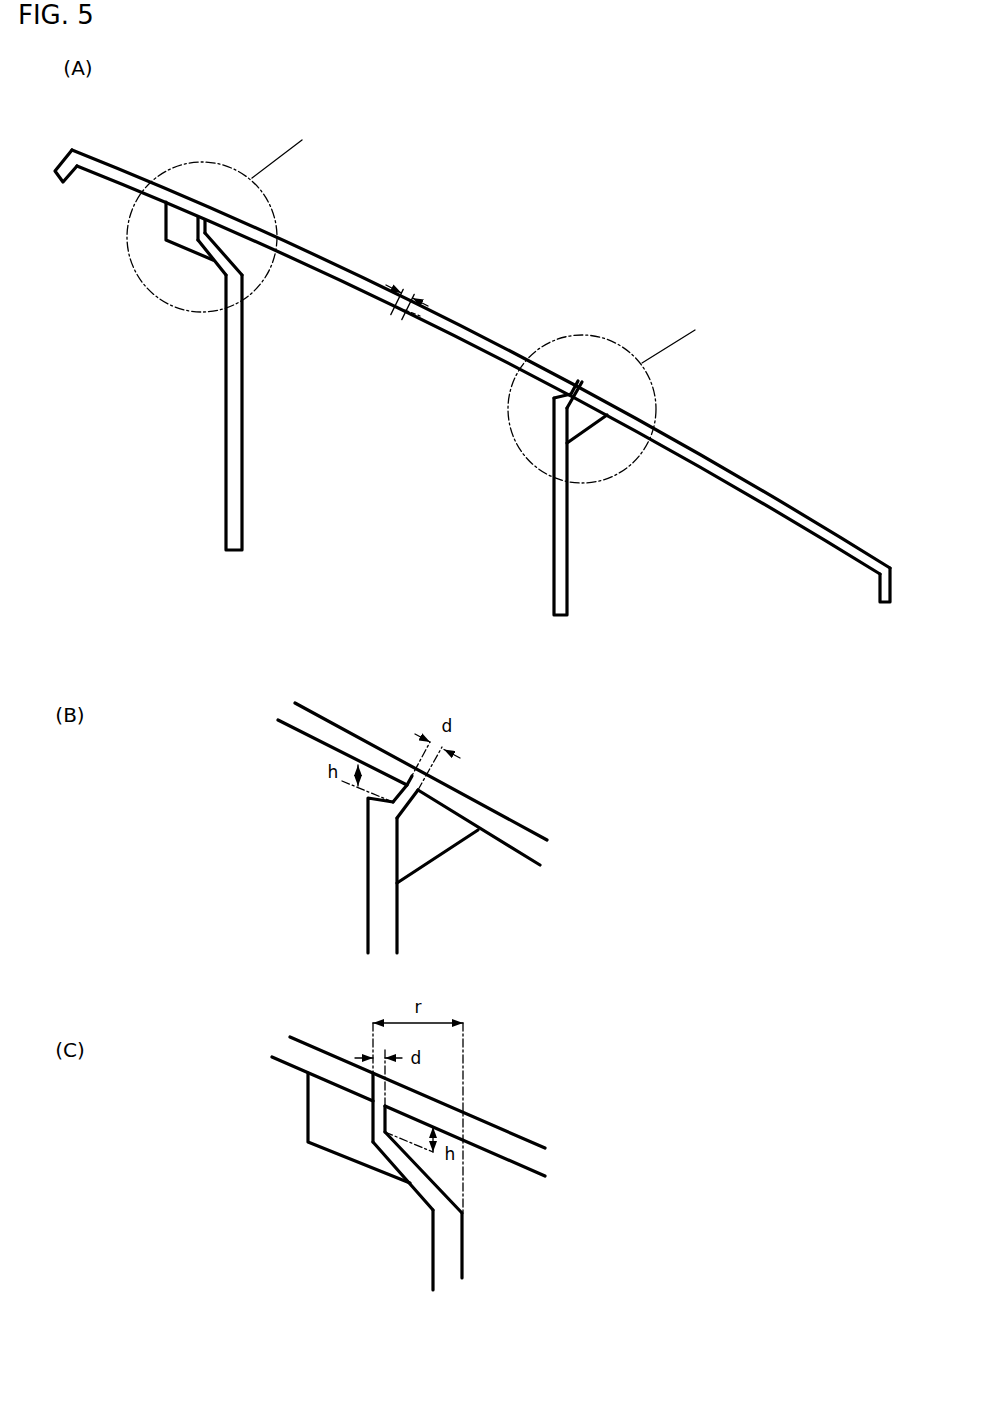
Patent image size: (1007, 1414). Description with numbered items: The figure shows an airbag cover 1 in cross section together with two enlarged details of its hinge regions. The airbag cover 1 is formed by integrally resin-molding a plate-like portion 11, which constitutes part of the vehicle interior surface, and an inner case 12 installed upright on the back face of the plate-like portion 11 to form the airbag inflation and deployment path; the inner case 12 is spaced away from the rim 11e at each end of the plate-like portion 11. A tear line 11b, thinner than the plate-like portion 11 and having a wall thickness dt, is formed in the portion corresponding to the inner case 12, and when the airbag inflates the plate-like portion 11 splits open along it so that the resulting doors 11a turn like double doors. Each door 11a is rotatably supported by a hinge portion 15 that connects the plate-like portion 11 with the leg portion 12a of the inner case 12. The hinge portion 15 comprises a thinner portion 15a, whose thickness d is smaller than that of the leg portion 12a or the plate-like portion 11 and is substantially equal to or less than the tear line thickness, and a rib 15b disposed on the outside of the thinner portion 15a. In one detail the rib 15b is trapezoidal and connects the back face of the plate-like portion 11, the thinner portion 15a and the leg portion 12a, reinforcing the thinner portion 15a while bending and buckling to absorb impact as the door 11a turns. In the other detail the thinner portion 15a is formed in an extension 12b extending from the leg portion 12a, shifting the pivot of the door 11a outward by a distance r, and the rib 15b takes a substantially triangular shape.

The airbag cover 1 is at (551, 249).
The plate-like portion 11 is at (762, 490).
The door 11a is at (313, 255).
The tear line 11b is at (399, 303).
The rim 11e is at (55, 174).
The inner case 12 is at (195, 437).
The leg portion 12a is at (243, 493).
The extension 12b is at (218, 266).
The hinge portion 15 is at (172, 263).
The thinner portion 15a is at (208, 228).
The rib 15b is at (177, 225).